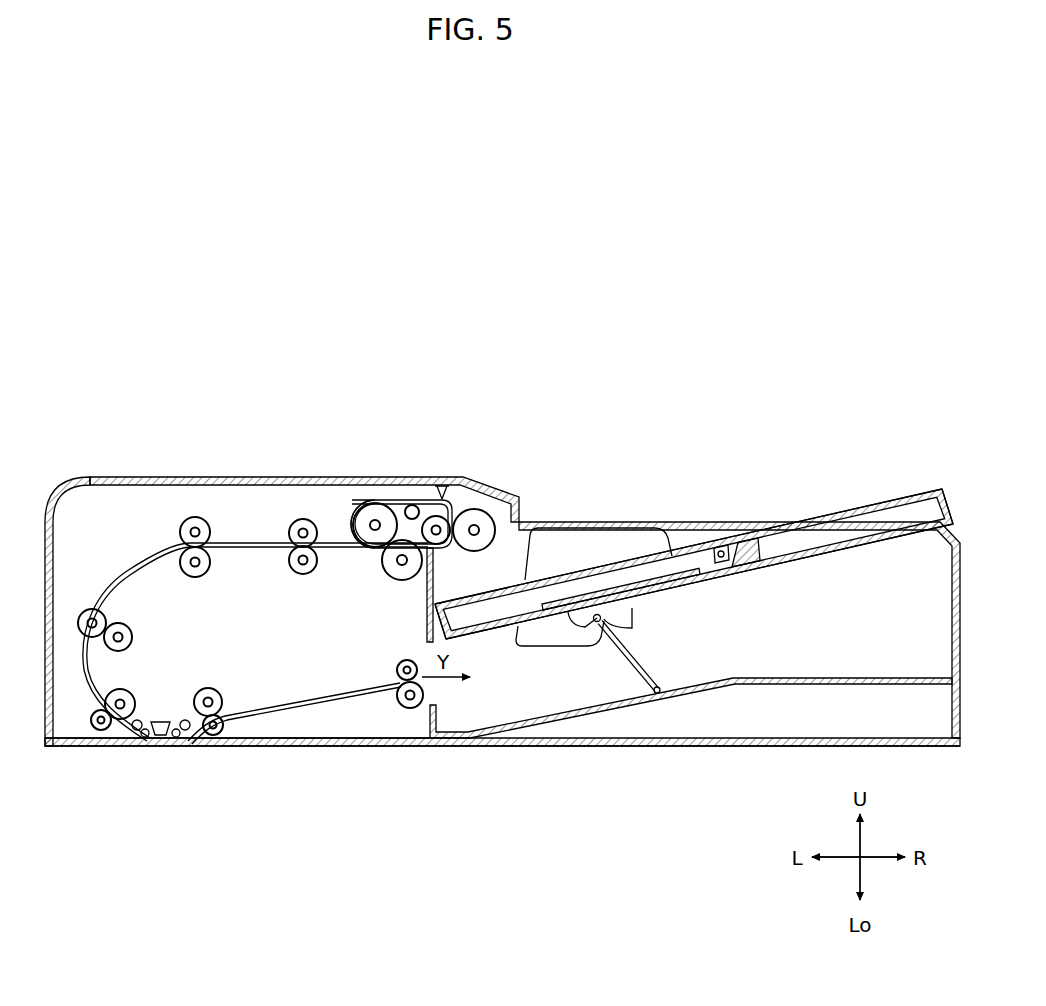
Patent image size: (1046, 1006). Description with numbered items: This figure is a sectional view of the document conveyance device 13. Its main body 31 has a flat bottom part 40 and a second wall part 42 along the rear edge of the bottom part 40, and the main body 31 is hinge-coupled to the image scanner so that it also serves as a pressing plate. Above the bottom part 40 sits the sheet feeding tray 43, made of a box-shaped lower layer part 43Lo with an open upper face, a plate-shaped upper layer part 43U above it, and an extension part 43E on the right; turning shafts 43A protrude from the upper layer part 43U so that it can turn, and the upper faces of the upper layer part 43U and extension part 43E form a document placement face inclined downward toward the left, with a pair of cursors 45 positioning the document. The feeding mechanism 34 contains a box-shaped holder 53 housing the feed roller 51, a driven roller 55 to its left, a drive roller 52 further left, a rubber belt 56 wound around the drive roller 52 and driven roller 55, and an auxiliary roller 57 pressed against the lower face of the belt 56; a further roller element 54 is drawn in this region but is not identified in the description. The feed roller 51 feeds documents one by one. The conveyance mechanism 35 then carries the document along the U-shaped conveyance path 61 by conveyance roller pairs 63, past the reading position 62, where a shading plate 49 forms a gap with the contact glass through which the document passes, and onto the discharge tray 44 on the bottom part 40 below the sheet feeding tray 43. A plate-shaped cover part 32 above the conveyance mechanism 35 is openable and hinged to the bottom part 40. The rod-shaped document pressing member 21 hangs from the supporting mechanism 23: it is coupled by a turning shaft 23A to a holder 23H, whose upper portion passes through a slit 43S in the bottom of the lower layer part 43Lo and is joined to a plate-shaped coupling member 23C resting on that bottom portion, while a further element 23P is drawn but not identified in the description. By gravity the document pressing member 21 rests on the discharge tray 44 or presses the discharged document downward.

The document conveyance device 13 is at (135, 378).
The conveyance mechanism 35 is at (110, 500).
The cover part 32 is at (205, 478).
The second wall part 42 is at (640, 522).
The bottom part 40 is at (545, 748).
The main body 31 is at (496, 762).
The reading position 62 is at (150, 752).
The discharge tray 44 is at (878, 678).
The conveyance path 61 is at (125, 590).
The conveyance rollers pair 63 is at (183, 525).
The shading plate 49 is at (165, 720).
The feeding mechanism 34 is at (378, 467).
The drive roller 52 is at (350, 503).
The holder 53 is at (348, 518).
The drive roller 54 is at (372, 523).
The rubber belt 56 is at (406, 507).
The driven roller 55 is at (441, 519).
The auxiliary roller 57 is at (383, 565).
The feed roller 51 is at (488, 516).
The cursors 45 is at (595, 528).
The sheet feeding tray 43 is at (845, 505).
The upper layer part 43U is at (738, 553).
The extension part 43E is at (885, 500).
The lower layer part 43Lo is at (705, 592).
The slit 43S is at (484, 632).
The turning shafts 43A is at (722, 550).
The supporting mechanism 23 is at (686, 611).
The coupling member 23C is at (736, 588).
The sheet pile 23P is at (650, 600).
The holder 23H is at (572, 628).
The turning shaft 23A is at (606, 622).
The document pressing member 21 is at (625, 662).